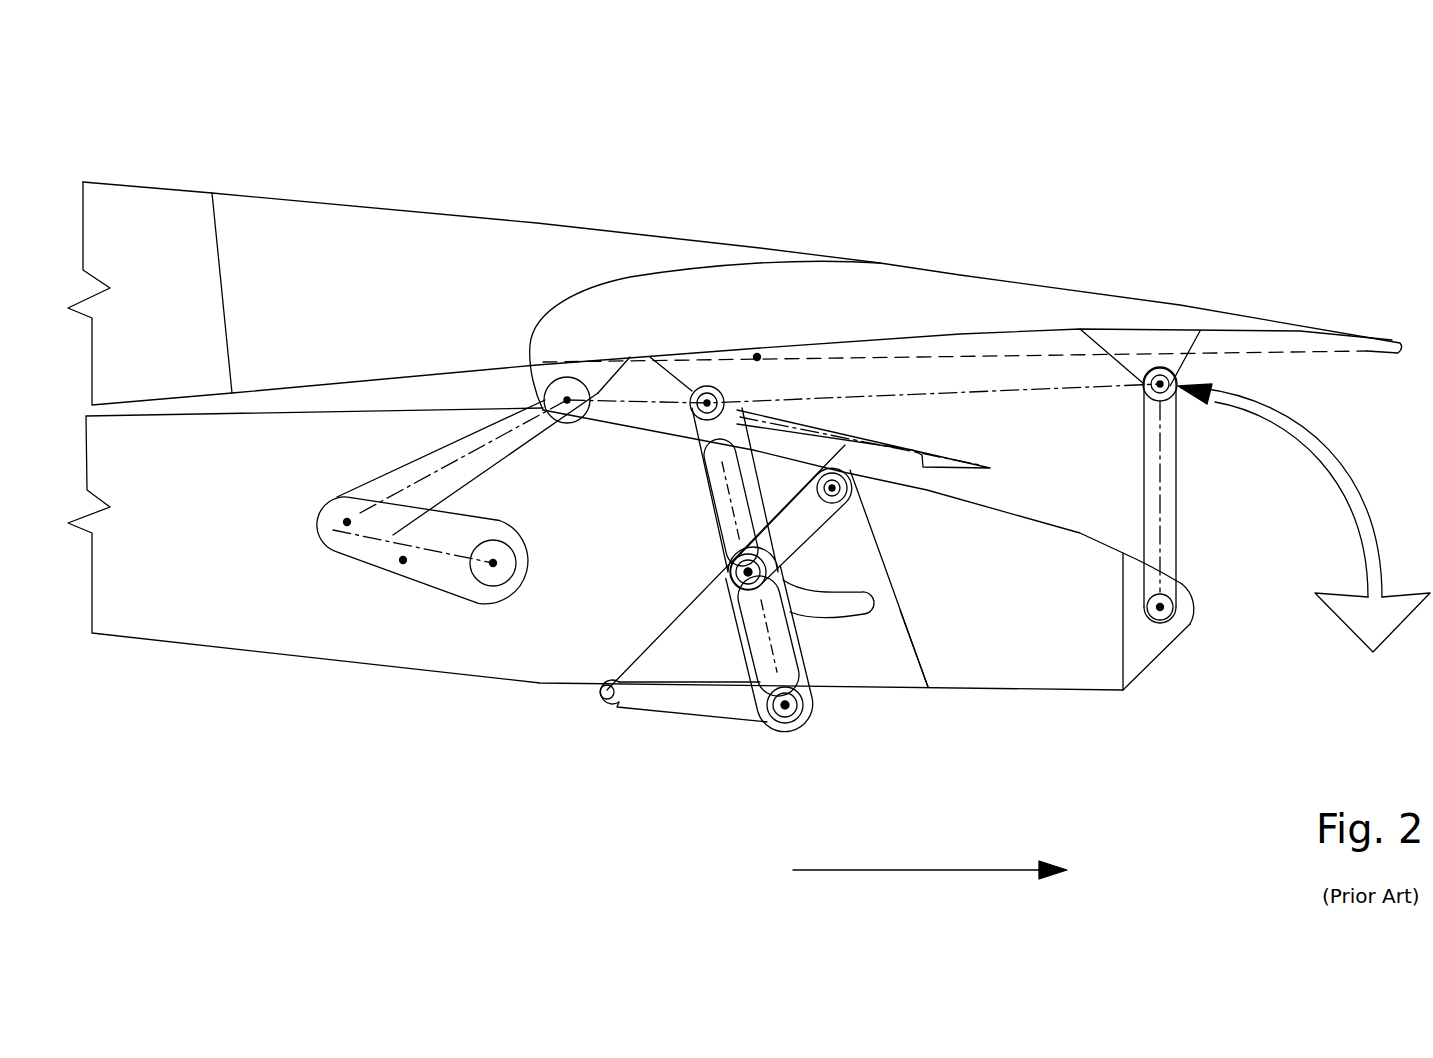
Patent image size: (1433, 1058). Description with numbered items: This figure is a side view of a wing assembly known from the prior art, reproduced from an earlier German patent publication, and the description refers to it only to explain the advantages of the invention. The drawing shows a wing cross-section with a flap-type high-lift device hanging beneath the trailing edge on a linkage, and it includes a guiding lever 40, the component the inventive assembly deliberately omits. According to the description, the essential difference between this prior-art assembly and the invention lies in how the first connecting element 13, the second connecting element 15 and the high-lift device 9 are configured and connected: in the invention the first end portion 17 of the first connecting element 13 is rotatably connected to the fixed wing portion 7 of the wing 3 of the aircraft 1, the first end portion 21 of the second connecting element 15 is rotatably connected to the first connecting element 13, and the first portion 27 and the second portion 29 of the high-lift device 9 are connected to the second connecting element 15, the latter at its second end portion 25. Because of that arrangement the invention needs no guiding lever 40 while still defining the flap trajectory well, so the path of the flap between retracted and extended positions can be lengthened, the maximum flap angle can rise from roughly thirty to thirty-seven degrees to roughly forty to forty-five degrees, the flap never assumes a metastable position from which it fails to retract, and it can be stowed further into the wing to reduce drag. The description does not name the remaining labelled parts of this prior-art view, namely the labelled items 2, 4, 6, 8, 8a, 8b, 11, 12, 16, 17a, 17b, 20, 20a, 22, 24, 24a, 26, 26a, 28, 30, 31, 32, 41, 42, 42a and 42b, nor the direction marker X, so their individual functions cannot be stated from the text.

The aircraft 1 is at (309, 212).
The flap 2 is at (942, 280).
The wing 3 is at (258, 647).
The flap deflection direction arrow 4 is at (1333, 513).
The flow direction arrow 6 is at (312, 456).
The fixed wing portion 7 is at (646, 786).
The flap hinge joint 8 is at (659, 430).
The hinge joint upper point 8a is at (733, 400).
The hinge joint axis 8b is at (703, 392).
The high-lift device 9 is at (1172, 733).
The drive arm rotation arrow 11 is at (470, 629).
The drive pivot 12 is at (493, 563).
The first connecting element 13 is at (403, 560).
The second connecting element 15 is at (422, 550).
The lever joint 16 is at (347, 522).
The first end portion of the first connecting element 17 is at (486, 402).
The support arm wing attachment 17a is at (598, 368).
The support arm pivot 17b is at (567, 403).
The flap carrier lever 20 is at (863, 436).
The upper link of flap carrier 20a is at (697, 452).
The first end portion of the second connecting element 21 is at (876, 531).
The lower link motion arrow 22 is at (735, 745).
The intermediate joint 24 is at (690, 562).
The lower link 24a is at (740, 620).
The second end portion of the second connecting element 25 is at (798, 535).
The lower joint motion arrow 26 is at (840, 710).
The lower joint 26a is at (793, 727).
The first portion of the high-lift device 27 is at (680, 705).
The lever motion arrow 28 is at (778, 457).
The second portion of the high-lift device 29 is at (569, 725).
The curved guide 30 is at (872, 600).
The strut lower portion 31 is at (917, 650).
The diagonal link 32 is at (663, 623).
The guiding lever 40 is at (1160, 488).
The rear strut lower pivot 41 is at (1170, 613).
The flap rotation arrow 42 is at (1304, 518).
The flap bracket 42a is at (1167, 345).
The flap bracket pivot 42b is at (1177, 403).
The longitudinal axis X is at (930, 853).